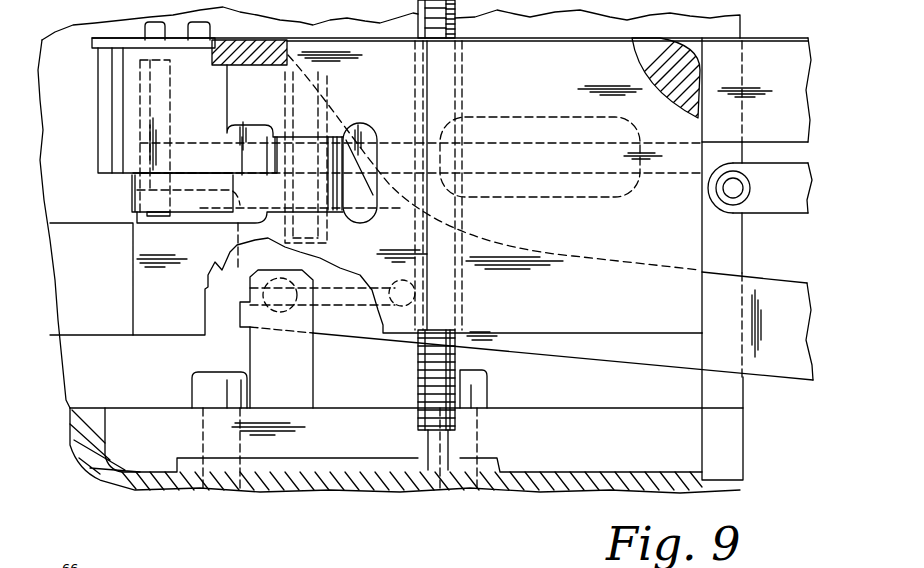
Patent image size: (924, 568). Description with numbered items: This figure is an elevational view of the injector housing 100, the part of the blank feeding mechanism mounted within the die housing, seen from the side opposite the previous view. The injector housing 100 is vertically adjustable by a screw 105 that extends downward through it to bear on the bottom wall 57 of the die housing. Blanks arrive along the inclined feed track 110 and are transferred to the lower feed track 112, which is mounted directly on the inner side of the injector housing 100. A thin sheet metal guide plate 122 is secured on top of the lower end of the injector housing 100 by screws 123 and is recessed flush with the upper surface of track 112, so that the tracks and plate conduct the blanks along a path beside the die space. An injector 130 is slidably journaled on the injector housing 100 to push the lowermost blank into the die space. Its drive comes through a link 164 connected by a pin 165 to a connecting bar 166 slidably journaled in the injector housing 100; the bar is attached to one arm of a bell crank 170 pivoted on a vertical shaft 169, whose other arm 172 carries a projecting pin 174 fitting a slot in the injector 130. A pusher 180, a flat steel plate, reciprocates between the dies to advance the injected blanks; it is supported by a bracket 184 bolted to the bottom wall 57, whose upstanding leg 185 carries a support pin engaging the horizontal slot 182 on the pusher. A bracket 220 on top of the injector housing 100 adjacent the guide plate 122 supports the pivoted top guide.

The bottom wall 57 is at (608, 470).
The injector housing 100 is at (537, 89).
The screw 105 is at (458, 355).
The feed track 110 is at (778, 78).
The lower feed track 112 is at (688, 68).
The guide plate 122 is at (95, 46).
The screws 123 is at (199, 20).
The injector 130 is at (172, 100).
The link 164 is at (769, 214).
The pin 165 is at (728, 207).
The connecting bar 166 is at (368, 172).
The vertical shaft 169 is at (325, 96).
The bell crank 170 is at (333, 215).
The arm 172 is at (262, 178).
The projecting pin 174 is at (166, 223).
The pusher 180 is at (132, 181).
The horizontal slot 182 is at (343, 302).
The bracket 184 is at (351, 408).
The upstanding leg 185 is at (316, 368).
The bracket 220 is at (271, 64).